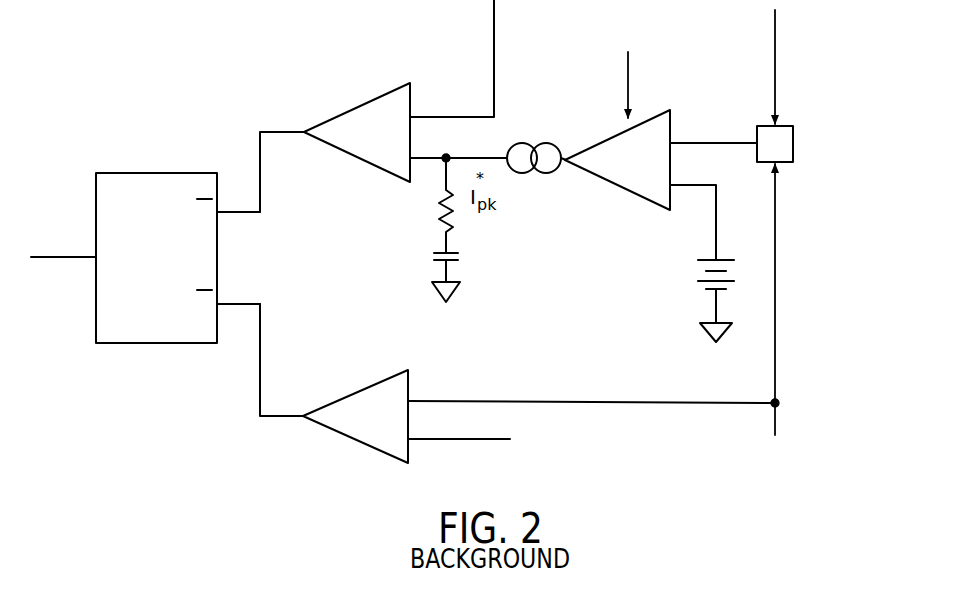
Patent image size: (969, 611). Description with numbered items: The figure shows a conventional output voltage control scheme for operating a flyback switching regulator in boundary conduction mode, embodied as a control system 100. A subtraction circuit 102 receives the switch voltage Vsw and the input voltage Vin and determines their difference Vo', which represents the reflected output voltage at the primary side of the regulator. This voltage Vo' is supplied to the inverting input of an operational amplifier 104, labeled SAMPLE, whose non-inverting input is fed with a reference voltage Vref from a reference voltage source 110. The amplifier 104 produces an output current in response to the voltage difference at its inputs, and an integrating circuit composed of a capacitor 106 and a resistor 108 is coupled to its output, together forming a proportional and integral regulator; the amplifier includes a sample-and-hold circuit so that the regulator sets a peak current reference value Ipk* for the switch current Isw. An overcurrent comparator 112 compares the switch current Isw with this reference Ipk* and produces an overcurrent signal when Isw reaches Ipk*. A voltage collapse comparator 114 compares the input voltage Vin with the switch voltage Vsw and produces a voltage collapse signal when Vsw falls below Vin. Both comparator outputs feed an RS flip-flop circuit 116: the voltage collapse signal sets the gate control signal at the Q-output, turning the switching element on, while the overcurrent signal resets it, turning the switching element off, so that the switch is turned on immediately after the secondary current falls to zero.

The control system 100 is at (140, 44).
The subtraction circuit 102 is at (793, 146).
The operational amplifier 104 is at (612, 182).
The capacitor 106 is at (430, 254).
The resistor 108 is at (434, 217).
The reference voltage source 110 is at (688, 278).
The overcurrent comparator 112 is at (340, 149).
The voltage collapse comparator 114 is at (350, 437).
The RS flip-flop circuit 116 is at (155, 344).